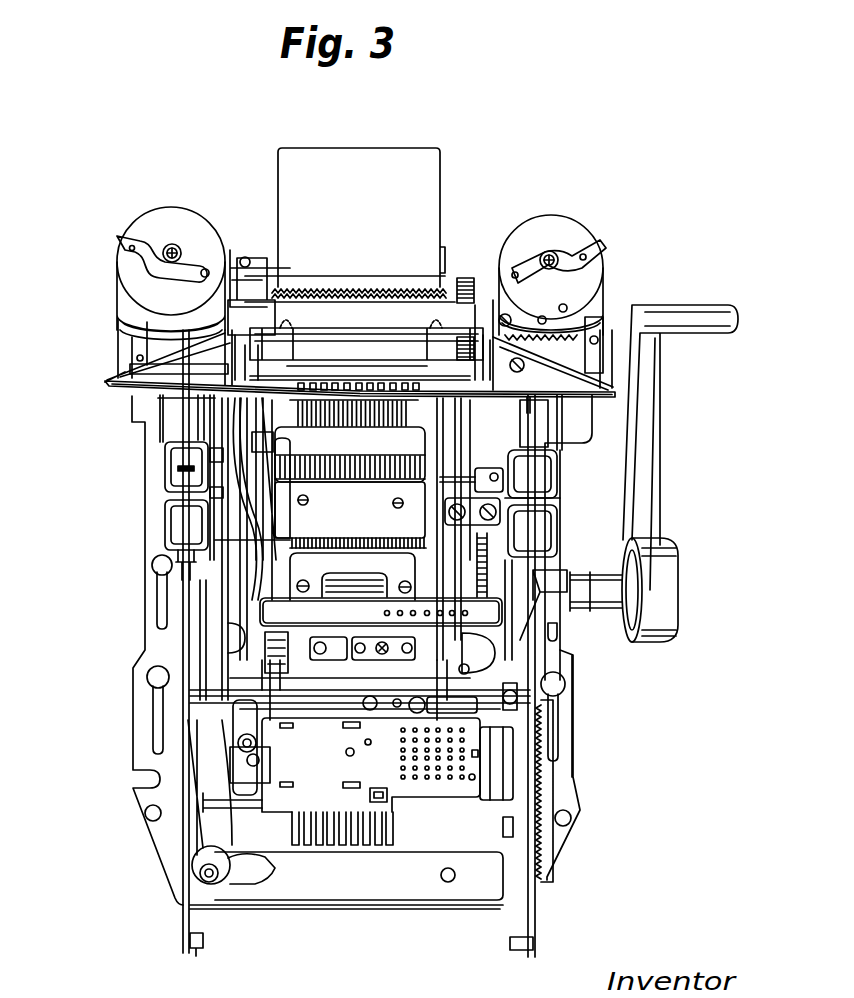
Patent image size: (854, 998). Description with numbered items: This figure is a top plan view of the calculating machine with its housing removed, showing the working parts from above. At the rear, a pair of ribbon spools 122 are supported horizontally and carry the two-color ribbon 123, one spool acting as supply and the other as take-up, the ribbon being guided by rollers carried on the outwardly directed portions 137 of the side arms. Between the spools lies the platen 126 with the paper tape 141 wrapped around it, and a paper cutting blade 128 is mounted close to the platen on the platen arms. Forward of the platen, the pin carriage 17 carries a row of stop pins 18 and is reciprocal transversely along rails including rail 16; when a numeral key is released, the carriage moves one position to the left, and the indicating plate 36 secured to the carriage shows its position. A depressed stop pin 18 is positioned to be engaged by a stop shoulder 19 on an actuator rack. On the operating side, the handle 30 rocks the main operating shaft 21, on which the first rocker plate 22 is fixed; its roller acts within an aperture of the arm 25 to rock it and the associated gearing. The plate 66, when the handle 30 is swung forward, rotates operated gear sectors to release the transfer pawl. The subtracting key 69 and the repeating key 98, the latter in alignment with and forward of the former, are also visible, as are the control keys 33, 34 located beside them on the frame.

The paper tape 141 is at (425, 173).
The ribbon spool 122 is at (165, 220).
The paper cutting blade 128 is at (259, 308).
The platen 126 is at (463, 283).
The two-color ribbon 123 is at (155, 360).
The outwardly directed portion 137 is at (113, 364).
The arm 25 is at (240, 443).
The subtracting key 69 is at (177, 474).
The repeating key 98 is at (172, 520).
The first rocker plate 22 is at (165, 543).
The plate 66 is at (297, 573).
The indicating plate 36 is at (452, 614).
The rail 16 is at (240, 692).
The pin carriage 17 is at (310, 775).
The stop pin 18 is at (450, 770).
The stop shoulder 19 is at (377, 840).
The main operating shaft 21 is at (605, 600).
The T key 33 is at (542, 535).
The S key 34 is at (545, 482).
The operating handle 30 is at (648, 455).